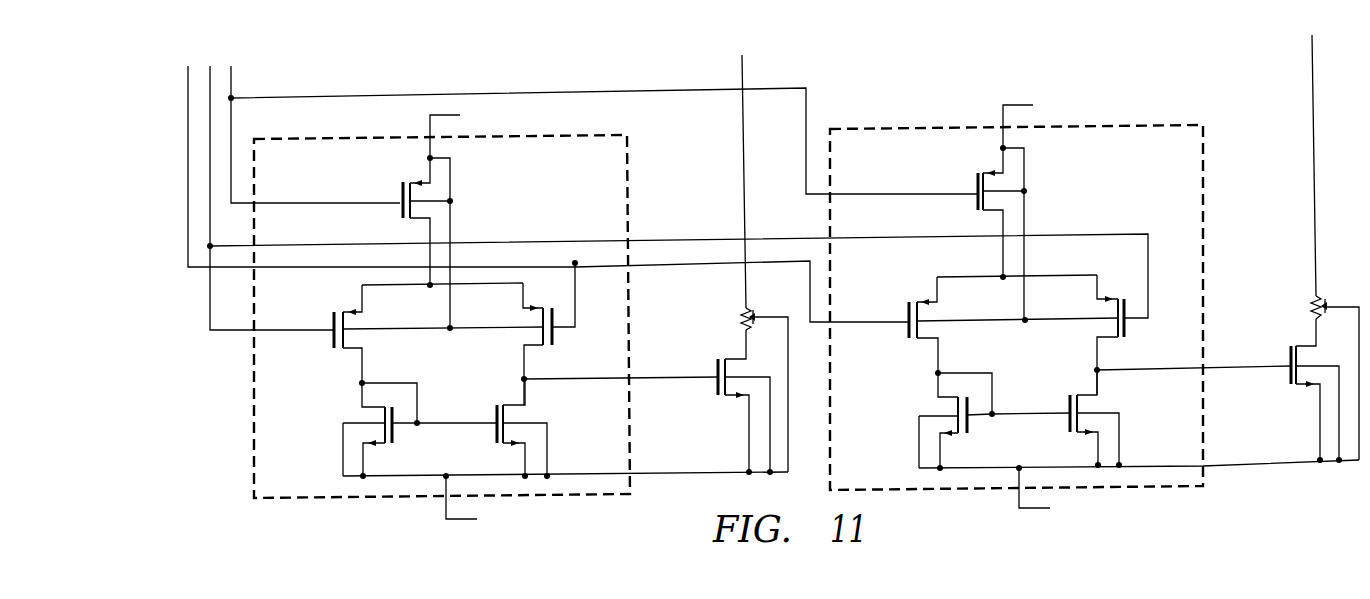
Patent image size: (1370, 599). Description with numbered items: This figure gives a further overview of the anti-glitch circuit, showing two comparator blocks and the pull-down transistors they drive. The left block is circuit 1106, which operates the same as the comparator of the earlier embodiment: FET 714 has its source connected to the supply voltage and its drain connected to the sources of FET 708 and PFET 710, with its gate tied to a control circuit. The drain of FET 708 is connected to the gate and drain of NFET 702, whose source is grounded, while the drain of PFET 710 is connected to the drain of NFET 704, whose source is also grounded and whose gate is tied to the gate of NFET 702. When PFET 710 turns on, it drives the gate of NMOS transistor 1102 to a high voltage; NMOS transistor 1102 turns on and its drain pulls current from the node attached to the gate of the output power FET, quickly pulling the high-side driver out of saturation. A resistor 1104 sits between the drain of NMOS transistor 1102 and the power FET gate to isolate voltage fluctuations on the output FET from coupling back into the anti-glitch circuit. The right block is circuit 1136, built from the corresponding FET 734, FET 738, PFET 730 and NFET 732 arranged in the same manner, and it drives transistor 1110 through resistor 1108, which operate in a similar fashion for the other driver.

The NFET 702 is at (398, 440).
The NFET 704 is at (496, 406).
The FET 708 is at (332, 345).
The PFET 710 is at (555, 345).
The FET 714 is at (400, 190).
The PFET 730 is at (1128, 338).
The NFET 732 is at (970, 433).
The FET 734 is at (977, 178).
The FET 738 is at (906, 335).
The NMOS transistor 1102 is at (718, 393).
The resistor 1104 is at (742, 314).
The circuit 1106 is at (335, 500).
The resistor 1108 is at (1312, 307).
The transistor 1110 is at (1290, 387).
The circuit 1136 is at (1115, 490).